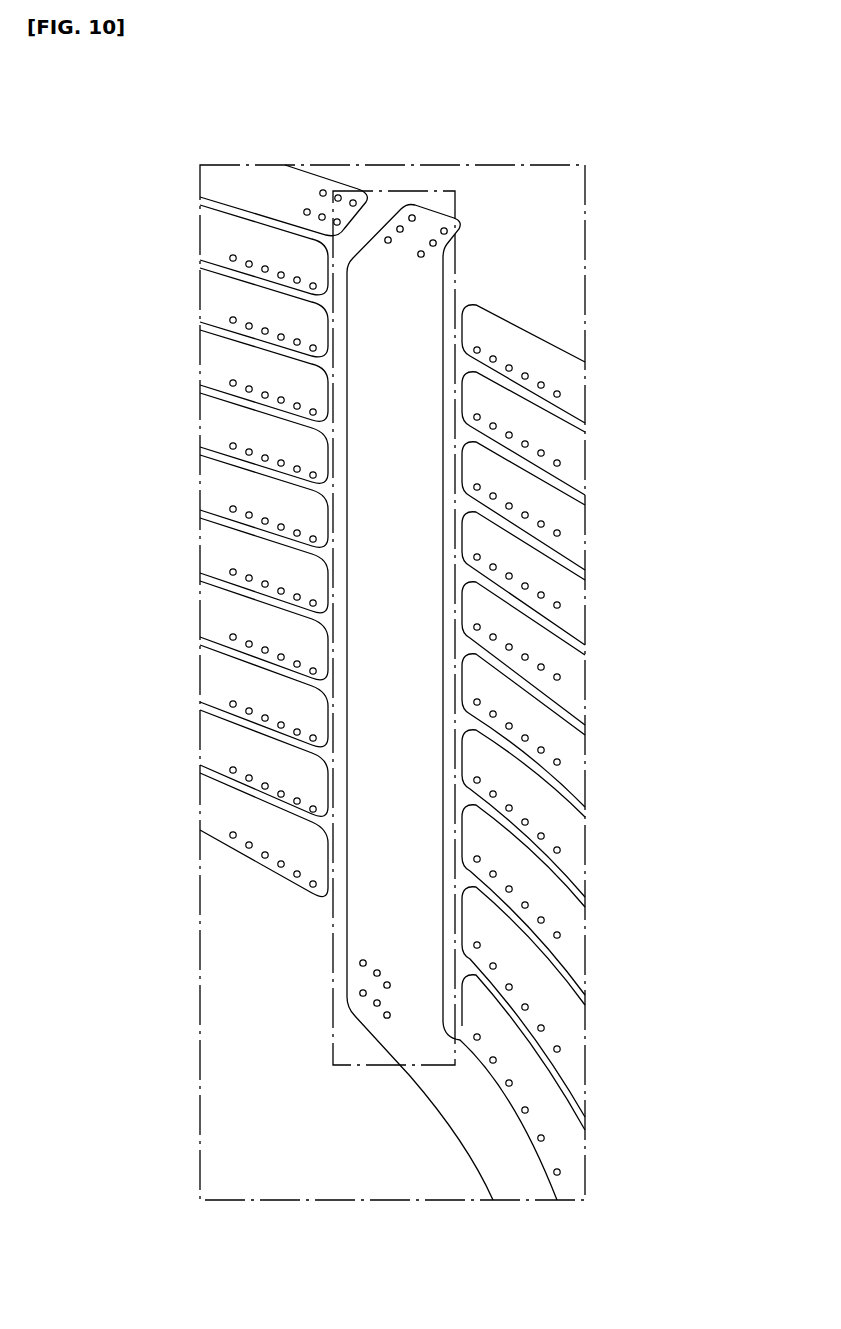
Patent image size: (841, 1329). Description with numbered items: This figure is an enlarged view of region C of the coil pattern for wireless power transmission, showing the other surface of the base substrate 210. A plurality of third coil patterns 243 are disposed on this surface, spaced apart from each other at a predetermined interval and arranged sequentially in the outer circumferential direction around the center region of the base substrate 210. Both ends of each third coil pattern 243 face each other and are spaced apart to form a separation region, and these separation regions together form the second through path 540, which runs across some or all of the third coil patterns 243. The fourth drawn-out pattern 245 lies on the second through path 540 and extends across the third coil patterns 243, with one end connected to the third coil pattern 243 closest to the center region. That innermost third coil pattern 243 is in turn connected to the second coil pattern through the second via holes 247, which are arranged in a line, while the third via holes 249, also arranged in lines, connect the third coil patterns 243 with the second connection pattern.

The base substrate 210 is at (246, 1094).
The third coil pattern 243 is at (218, 181).
The fourth drawn-out pattern 245 is at (400, 523).
The second via hole 247 is at (383, 1015).
The third via hole 249 is at (310, 289).
The second through path 540 is at (393, 190).
The region C is at (585, 216).